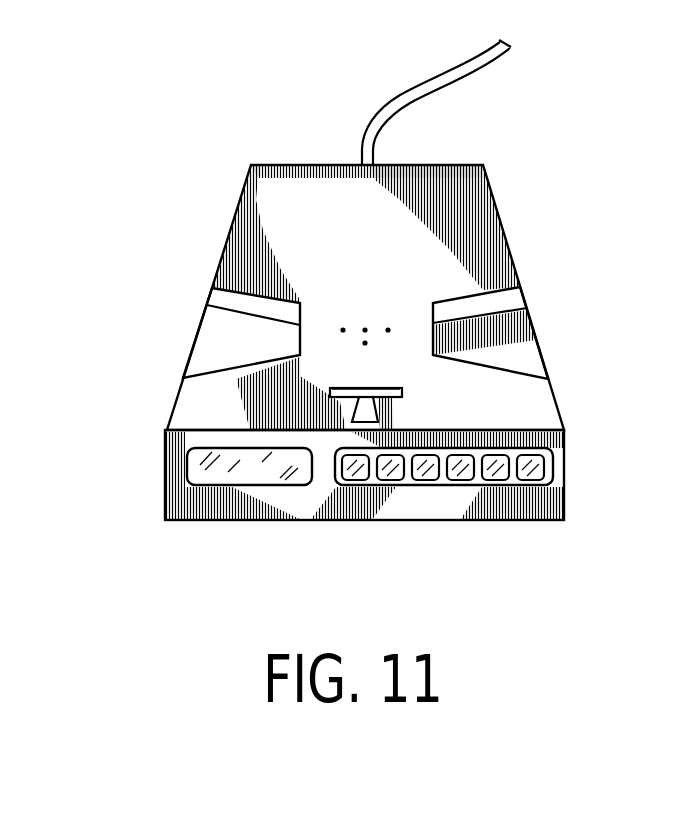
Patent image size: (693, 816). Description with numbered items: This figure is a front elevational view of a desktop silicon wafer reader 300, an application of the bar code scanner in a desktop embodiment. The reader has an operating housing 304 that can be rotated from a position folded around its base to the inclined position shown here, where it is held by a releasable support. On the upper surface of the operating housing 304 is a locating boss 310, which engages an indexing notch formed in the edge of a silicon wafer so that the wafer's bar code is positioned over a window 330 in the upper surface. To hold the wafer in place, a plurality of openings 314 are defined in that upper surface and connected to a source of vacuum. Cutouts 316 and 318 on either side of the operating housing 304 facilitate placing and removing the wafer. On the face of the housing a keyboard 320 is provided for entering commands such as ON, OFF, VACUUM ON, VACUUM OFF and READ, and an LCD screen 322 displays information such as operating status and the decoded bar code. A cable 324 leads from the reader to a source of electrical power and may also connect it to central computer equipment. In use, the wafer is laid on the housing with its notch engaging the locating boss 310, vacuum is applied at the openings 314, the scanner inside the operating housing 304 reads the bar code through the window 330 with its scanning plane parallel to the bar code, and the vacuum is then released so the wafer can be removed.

The desktop silicon wafer reader 300 is at (246, 553).
The operating housing 304 is at (255, 232).
The locating boss 310 is at (378, 409).
The openings 314 is at (370, 306).
The cutout 316 is at (266, 340).
The cutout 318 is at (486, 342).
The keyboard 320 is at (443, 486).
The LCD screen 322 is at (210, 472).
The cable 324 is at (430, 82).
The window 330 is at (331, 392).